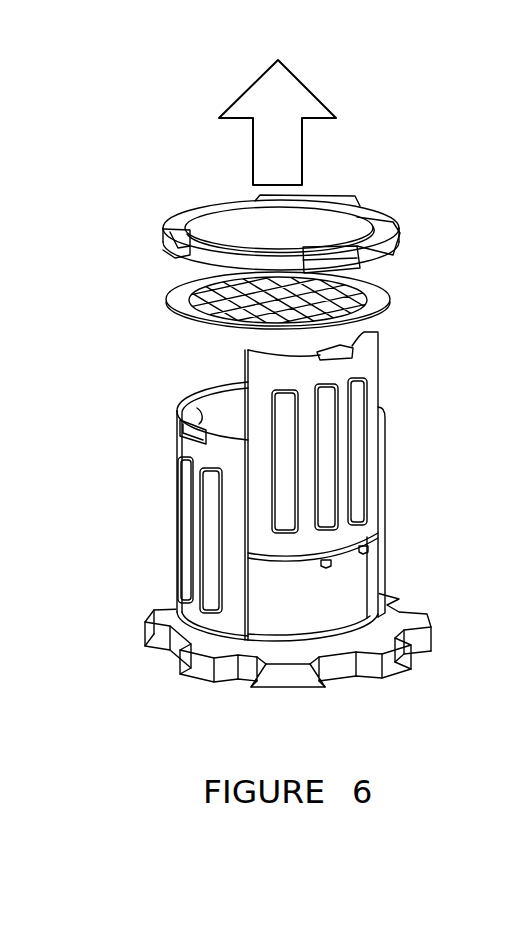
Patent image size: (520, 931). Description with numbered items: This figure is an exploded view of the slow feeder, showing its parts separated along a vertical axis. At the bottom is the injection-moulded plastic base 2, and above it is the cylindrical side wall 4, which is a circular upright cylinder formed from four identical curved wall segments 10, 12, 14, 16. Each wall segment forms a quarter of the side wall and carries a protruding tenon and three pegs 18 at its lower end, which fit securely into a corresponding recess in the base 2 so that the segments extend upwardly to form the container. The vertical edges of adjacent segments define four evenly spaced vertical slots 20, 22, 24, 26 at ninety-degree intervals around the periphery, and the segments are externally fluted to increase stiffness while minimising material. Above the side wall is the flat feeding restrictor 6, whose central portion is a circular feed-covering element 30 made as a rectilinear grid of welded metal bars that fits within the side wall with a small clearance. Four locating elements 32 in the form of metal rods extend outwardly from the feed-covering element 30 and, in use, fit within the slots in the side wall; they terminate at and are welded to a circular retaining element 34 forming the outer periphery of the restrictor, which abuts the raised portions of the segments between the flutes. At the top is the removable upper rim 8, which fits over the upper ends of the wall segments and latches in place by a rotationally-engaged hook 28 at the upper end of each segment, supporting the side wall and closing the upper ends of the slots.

The base 2 is at (150, 637).
The cylindrical side wall 4 is at (282, 504).
The feeding restrictor 6 is at (282, 300).
The removable upper rim 8 is at (178, 226).
The curved wall segment 10 is at (376, 467).
The curved wall segment 12 is at (373, 555).
The curved wall segment 14 is at (152, 511).
The curved wall segment 16 is at (193, 483).
The pegs 18 is at (340, 550).
The vertical slot 20 is at (382, 450).
The vertical slot 22 is at (325, 564).
The vertical slot 24 is at (183, 425).
The vertical slot 26 is at (243, 525).
The rotationally-engaged hook 28 is at (335, 325).
The feed-covering element 30 is at (355, 277).
The locating elements 32 is at (186, 292).
The retaining element 34 is at (188, 302).